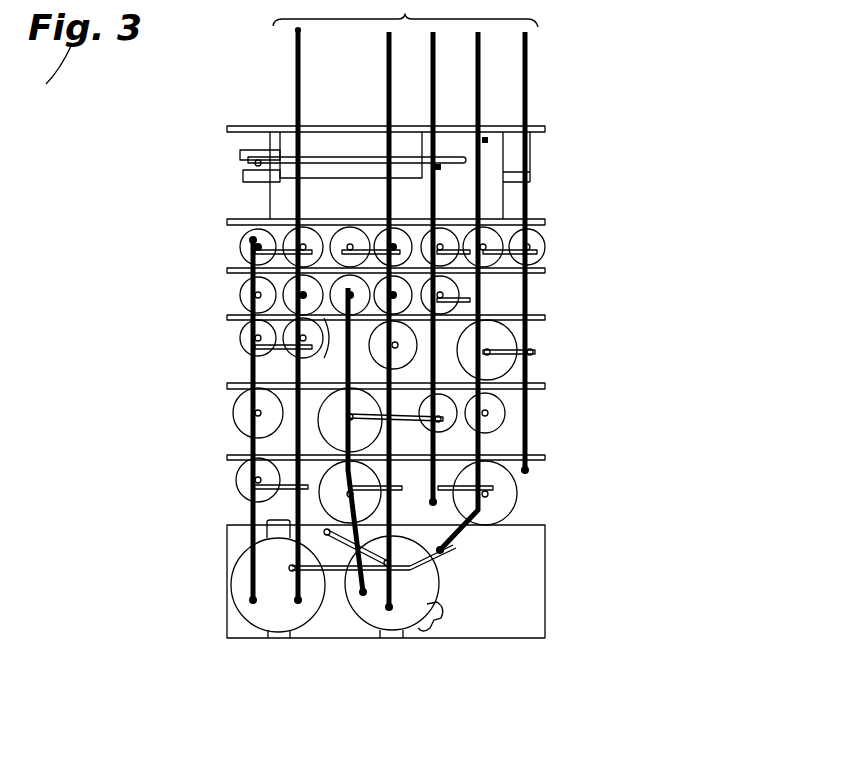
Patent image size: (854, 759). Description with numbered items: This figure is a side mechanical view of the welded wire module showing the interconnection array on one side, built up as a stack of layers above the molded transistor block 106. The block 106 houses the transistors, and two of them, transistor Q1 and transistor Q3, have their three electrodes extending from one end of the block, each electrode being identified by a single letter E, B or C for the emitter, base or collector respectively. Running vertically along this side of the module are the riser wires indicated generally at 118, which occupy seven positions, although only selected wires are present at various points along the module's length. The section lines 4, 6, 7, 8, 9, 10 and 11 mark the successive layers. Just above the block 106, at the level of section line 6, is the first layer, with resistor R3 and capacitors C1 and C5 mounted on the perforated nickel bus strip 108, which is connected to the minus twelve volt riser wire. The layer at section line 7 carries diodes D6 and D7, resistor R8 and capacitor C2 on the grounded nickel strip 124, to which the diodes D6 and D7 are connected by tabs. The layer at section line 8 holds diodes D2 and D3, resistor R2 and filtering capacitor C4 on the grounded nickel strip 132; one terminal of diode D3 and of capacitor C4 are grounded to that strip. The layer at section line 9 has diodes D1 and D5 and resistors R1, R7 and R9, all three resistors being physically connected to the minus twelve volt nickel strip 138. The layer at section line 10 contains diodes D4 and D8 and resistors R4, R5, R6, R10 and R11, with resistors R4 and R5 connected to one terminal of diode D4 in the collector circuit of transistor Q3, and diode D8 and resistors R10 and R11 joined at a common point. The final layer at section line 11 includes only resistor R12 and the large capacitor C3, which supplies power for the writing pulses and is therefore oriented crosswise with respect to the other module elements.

The riser wires 118 is at (405, 13).
The section line 11— 11 is at (146, 129).
The section line 10— 10 is at (121, 221).
The section line 9— 9 is at (384, 269).
The section line 8— 8 is at (388, 319).
The section line 7— 7 is at (385, 392).
The section line 6— 6 is at (387, 463).
The section line 4— 4 is at (384, 594).
The nickel strip 138 is at (225, 270).
The nickel strip 132 is at (225, 319).
The nickel strip 124 is at (226, 390).
The perforated nickel bus strip 108 is at (226, 462).
The molded block 106 is at (340, 628).
The resistor R1 is at (462, 290).
The resistor R2 is at (289, 355).
The resistor R3 is at (240, 490).
The resistor R4 is at (244, 224).
The resistor R5 is at (316, 224).
The resistor R6 is at (396, 224).
The resistor R7 is at (240, 296).
The resistor R8 is at (452, 428).
The resistor R9 is at (470, 300).
The resistor R10 is at (508, 222).
The resistor R11 is at (548, 234).
The resistor R12 is at (347, 148).
The diode D1 is at (350, 315).
The diode D2 is at (400, 358).
The diode D3 is at (240, 346).
The diode D4 is at (342, 223).
The diode D5 is at (308, 354).
The diode D6 is at (236, 420).
The diode D7 is at (505, 425).
The diode D8 is at (456, 225).
The capacitor C1 is at (325, 497).
The capacitor C2 is at (326, 425).
The capacitor C3 is at (337, 149).
The filtering capacitor C4 is at (510, 372).
The capacitor C5 is at (518, 503).
The transistor Q1 is at (420, 592).
The transistor Q3 is at (240, 596).
The emitter electrode E is at (332, 592).
The collector electrode C is at (318, 586).
The base electrode B is at (327, 604).